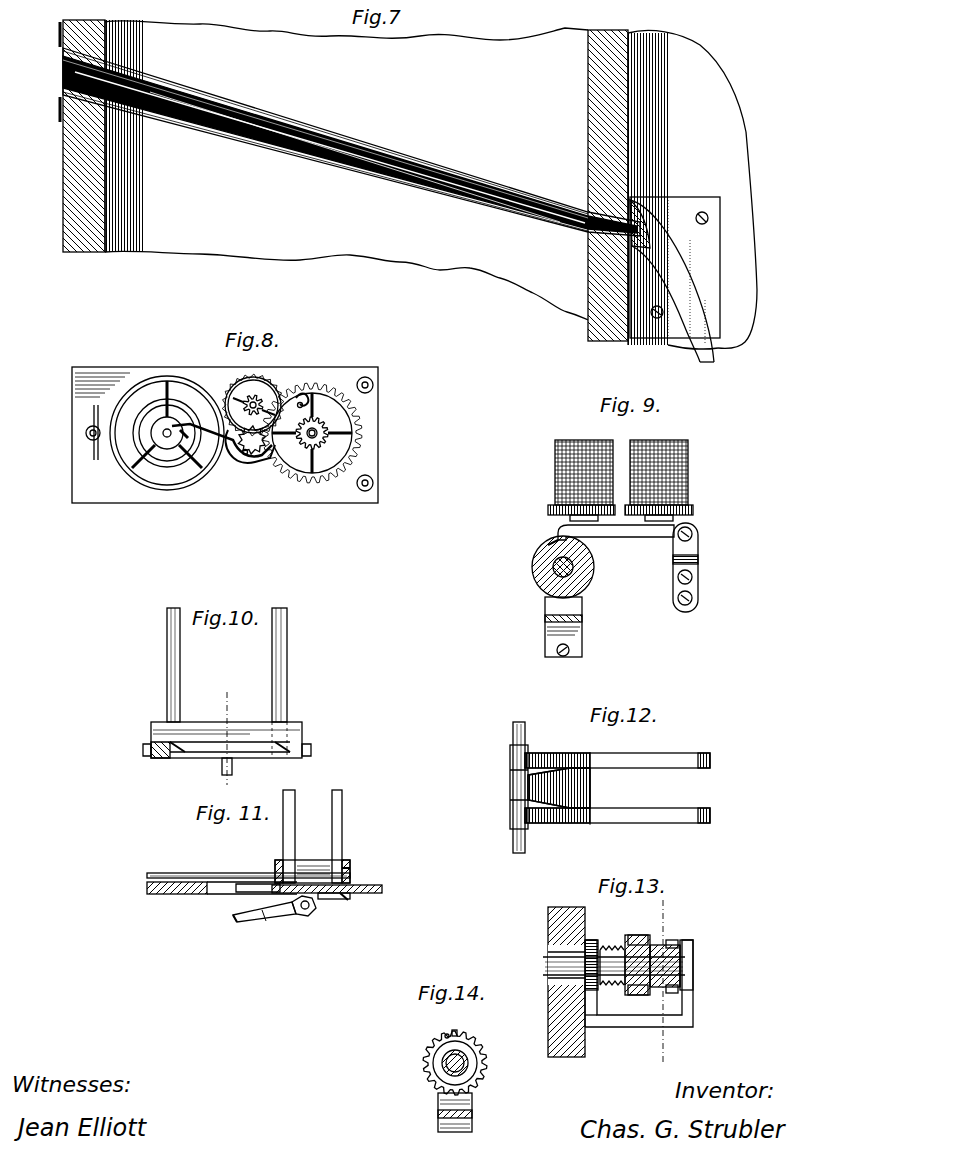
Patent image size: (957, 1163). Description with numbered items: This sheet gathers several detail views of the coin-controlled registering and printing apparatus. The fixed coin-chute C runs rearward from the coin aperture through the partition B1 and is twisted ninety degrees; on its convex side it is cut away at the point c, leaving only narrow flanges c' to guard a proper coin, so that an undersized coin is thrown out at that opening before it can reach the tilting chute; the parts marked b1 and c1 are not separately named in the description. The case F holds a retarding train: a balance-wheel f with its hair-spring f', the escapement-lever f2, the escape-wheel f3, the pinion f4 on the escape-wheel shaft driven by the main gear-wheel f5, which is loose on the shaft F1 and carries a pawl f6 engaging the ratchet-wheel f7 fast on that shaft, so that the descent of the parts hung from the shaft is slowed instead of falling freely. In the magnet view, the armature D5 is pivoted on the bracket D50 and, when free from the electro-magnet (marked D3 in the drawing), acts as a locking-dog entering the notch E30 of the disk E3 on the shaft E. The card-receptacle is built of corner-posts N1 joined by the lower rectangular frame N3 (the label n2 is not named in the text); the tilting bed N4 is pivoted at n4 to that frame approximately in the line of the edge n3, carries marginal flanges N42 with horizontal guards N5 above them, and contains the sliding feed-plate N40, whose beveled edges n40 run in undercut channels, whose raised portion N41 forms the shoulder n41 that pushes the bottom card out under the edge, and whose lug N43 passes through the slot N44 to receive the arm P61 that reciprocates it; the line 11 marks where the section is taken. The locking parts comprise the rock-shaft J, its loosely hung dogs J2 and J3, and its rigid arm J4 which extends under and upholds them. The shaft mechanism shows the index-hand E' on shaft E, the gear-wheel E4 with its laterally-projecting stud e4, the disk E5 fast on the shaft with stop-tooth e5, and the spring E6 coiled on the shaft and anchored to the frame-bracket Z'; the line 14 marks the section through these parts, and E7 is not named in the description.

In FIG. 7, the frame post b1 is at (62, 90).
In FIG. 7, the partition B1 is at (545, 136).
In FIG. 7, the fixed coin-chute C is at (351, 142).
In FIG. 7, the guarding flanges c' is at (325, 132).
In FIG. 7, the cut-away opening c is at (325, 139).
In FIG. 7, the rod lower sleeve c1 is at (118, 112).
In FIG. 8, the case F is at (225, 435).
In FIG. 8, the balance-wheel f is at (99, 416).
In FIG. 8, the hair-spring f' is at (159, 438).
In FIG. 8, the escapement-lever f2 is at (258, 462).
In FIG. 8, the escape-wheel f3 is at (245, 455).
In FIG. 8, the pinion f4 is at (238, 380).
In FIG. 8, the main gear-wheel f5 is at (332, 485).
In FIG. 8, the pawl f6 is at (318, 425).
In FIG. 8, the ratchet-wheel f7 is at (322, 425).
In FIG. 8, the shaft F1 is at (320, 440).
In FIG. 9, the magnet coils D3 is at (515, 489).
In FIG. 9, the armature D5 is at (640, 537).
In FIG. 9, the notch E30 is at (545, 542).
In FIG. 9, the disk E3 is at (588, 560).
In FIG. 13, the disk E3 is at (637, 995).
In FIG. 9, the shaft E is at (582, 607).
In FIG. 14, the shaft E is at (478, 1091).
In FIG. 9, the bracket D50 is at (698, 560).
In FIG. 10, the corner-posts N1 is at (271, 651).
In FIG. 11, the corner-posts N1 is at (295, 812).
In FIG. 10, the marginal flanges N42 is at (303, 732).
In FIG. 10, the lower rectangular frame N3 is at (158, 722).
In FIG. 11, the lower rectangular frame N3 is at (314, 865).
In FIG. 10, the pivot n4 is at (143, 750).
In FIG. 10, the beveled edges n40 is at (180, 752).
In FIG. 10, the sliding card-feed plate N40 is at (255, 750).
In FIG. 11, the sliding card-feed plate N40 is at (362, 895).
In FIG. 10, the section line 11 is at (229, 738).
In FIG. 11, the pin n2 is at (350, 864).
In FIG. 11, the horizontal guards N5 is at (200, 874).
In FIG. 11, the tilting platen or bed N4 is at (178, 898).
In FIG. 11, the inner lower edge n3 is at (270, 884).
In FIG. 11, the raised portion N41 is at (372, 884).
In FIG. 11, the lug N43 is at (316, 903).
In FIG. 11, the slot N44 is at (254, 911).
In FIG. 11, the arm P61 is at (258, 920).
In FIG. 11, the shoulder n41 is at (348, 900).
In FIG. 12, the rock-shaft J is at (530, 842).
In FIG. 12, the locking-dog J2 is at (660, 753).
In FIG. 12, the locking-dog J3 is at (655, 810).
In FIG. 12, the arm J4 is at (582, 783).
In FIG. 13, the frame-bracket Z' is at (633, 982).
In FIG. 13, the index-hand E' is at (614, 942).
In FIG. 13, the spring E6 is at (575, 978).
In FIG. 13, the gear-wheel E4 is at (636, 936).
In FIG. 14, the gear-wheel E4 is at (478, 1040).
In FIG. 13, the disk E5 is at (656, 990).
In FIG. 14, the disk E5 is at (445, 1060).
In FIG. 13, the stop-tooth e5 is at (655, 935).
In FIG. 14, the stop-tooth e5 is at (445, 1035).
In FIG. 13, the end plate E7 is at (695, 945).
In FIG. 13, the section line 14 is at (668, 981).
In FIG. 14, the stud e4 is at (458, 1033).